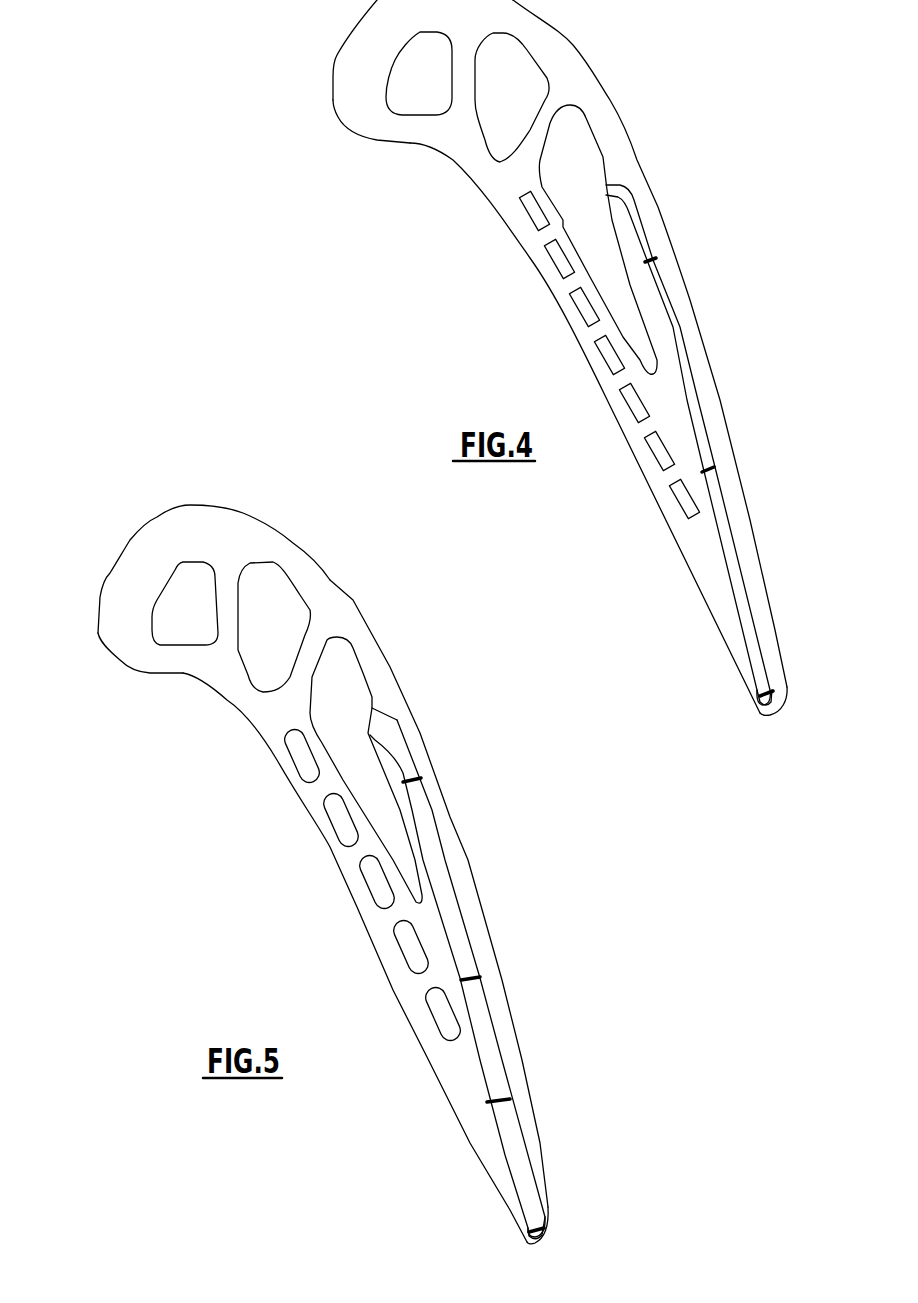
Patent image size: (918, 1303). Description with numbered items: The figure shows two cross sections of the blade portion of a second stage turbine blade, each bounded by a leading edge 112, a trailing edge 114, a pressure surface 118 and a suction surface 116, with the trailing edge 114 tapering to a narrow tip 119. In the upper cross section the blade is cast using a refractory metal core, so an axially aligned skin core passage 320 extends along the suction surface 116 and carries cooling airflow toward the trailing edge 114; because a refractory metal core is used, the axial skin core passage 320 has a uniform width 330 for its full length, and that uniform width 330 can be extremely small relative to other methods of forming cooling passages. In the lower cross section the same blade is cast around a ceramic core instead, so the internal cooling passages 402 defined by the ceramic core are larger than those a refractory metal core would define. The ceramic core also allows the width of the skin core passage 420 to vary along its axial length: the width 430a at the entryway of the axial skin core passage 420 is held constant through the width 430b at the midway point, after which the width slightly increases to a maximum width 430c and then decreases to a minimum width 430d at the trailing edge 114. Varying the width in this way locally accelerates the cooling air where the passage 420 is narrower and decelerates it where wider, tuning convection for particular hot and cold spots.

In FIG. 4, the leading edge 112 is at (338, 50).
In FIG. 5, the leading edge 112 is at (98, 606).
In FIG. 4, the trailing edge 114 is at (760, 713).
In FIG. 5, the trailing edge 114 is at (527, 1243).
In FIG. 4, the suction surface 116 is at (665, 212).
In FIG. 5, the suction surface 116 is at (393, 660).
In FIG. 4, the pressure surface 118 is at (563, 318).
In FIG. 5, the pressure surface 118 is at (327, 847).
In FIG. 4, the trailing edge outlet 119 is at (773, 712).
In FIG. 5, the trailing edge outlet 119 is at (542, 1243).
In FIG. 4, the axial skin core passage 320 is at (688, 388).
In FIG. 4, the uniform width 330 is at (648, 258).
In FIG. 5, the internal cooling passages 402 is at (295, 641).
In FIG. 5, the skin core passage 420 is at (460, 945).
In FIG. 5, the width at entryway 430a is at (408, 778).
In FIG. 5, the width at midway point 430b is at (478, 982).
In FIG. 5, the maximum width 430c is at (508, 1104).
In FIG. 5, the minimum width 430d is at (537, 1228).